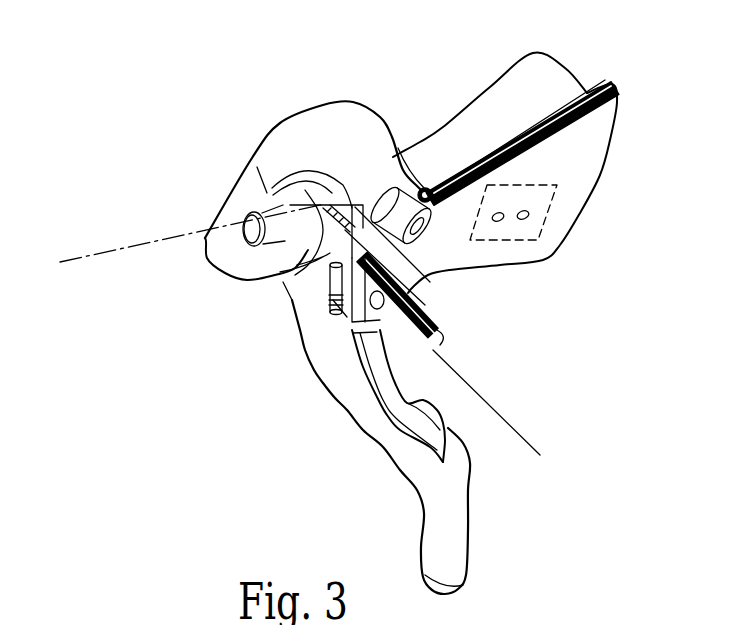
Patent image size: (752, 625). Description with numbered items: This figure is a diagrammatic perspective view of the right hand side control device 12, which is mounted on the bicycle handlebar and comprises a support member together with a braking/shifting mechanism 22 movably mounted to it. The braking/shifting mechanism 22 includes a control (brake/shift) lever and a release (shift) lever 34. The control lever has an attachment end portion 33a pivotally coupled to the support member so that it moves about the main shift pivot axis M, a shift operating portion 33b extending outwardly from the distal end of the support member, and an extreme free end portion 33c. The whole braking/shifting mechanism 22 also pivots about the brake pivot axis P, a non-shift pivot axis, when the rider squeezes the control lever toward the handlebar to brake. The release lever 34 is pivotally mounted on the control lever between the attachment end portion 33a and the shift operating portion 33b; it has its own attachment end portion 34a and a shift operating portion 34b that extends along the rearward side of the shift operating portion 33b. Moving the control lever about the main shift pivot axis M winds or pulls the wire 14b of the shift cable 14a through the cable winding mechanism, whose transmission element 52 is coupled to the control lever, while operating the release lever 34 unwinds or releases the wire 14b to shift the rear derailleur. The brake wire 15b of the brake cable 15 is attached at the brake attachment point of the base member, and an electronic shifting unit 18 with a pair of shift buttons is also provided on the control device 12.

The control device 12 is at (153, 158).
The shift cable 14a is at (437, 323).
The wire 14b is at (340, 195).
The brake cable 15 is at (598, 90).
The brake wire 15b is at (414, 184).
The electronic shifting unit 18 is at (550, 204).
The braking/shifting mechanism 22 is at (300, 158).
The attachment end portion 33a is at (297, 306).
The shift operating portion 33b is at (353, 408).
The extreme free end portion 33c is at (463, 585).
The release lever 34 is at (437, 417).
The attachment end portion 34a is at (352, 328).
The shift operating portion 34b is at (458, 437).
The transmission element 52 is at (313, 303).
The main shift pivot axis M is at (140, 250).
The brake pivot axis P is at (505, 420).